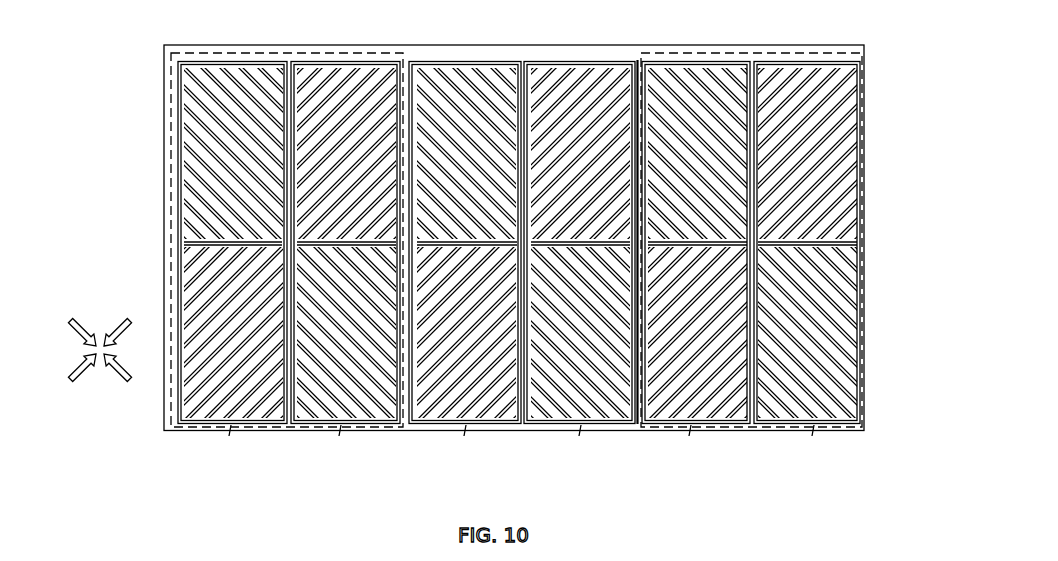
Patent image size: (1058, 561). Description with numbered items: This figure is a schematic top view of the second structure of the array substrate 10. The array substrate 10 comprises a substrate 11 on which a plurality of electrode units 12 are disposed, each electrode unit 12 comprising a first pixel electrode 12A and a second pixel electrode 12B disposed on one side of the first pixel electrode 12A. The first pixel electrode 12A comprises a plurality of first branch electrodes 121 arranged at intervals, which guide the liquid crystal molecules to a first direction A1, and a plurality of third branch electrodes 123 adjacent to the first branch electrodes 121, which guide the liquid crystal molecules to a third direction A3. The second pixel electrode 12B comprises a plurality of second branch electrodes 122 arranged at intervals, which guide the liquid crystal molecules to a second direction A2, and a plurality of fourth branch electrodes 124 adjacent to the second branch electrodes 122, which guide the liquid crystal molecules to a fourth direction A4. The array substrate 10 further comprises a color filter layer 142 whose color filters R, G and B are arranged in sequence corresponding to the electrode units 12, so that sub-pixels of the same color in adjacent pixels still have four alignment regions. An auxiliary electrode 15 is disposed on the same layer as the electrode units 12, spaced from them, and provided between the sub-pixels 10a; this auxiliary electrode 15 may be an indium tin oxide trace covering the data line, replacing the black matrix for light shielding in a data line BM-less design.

The array substrate 10 is at (148, 29).
The sub-pixel 10a is at (696, 56).
The substrate 11 is at (866, 51).
The electrode unit 12 is at (358, 56).
The first pixel electrode 12A is at (108, 185).
The second pixel electrode 12B is at (909, 148).
The first branch electrode 121 is at (205, 186).
The second branch electrode 122 is at (860, 148).
The third branch electrode 123 is at (205, 272).
The fourth branch electrode 124 is at (860, 343).
The color filter layer 142 is at (463, 446).
The auxiliary electrode 15 is at (637, 58).
The first direction A1 is at (77, 333).
The second direction A2 is at (126, 333).
The third direction A3 is at (77, 366).
The fourth direction A4 is at (126, 366).